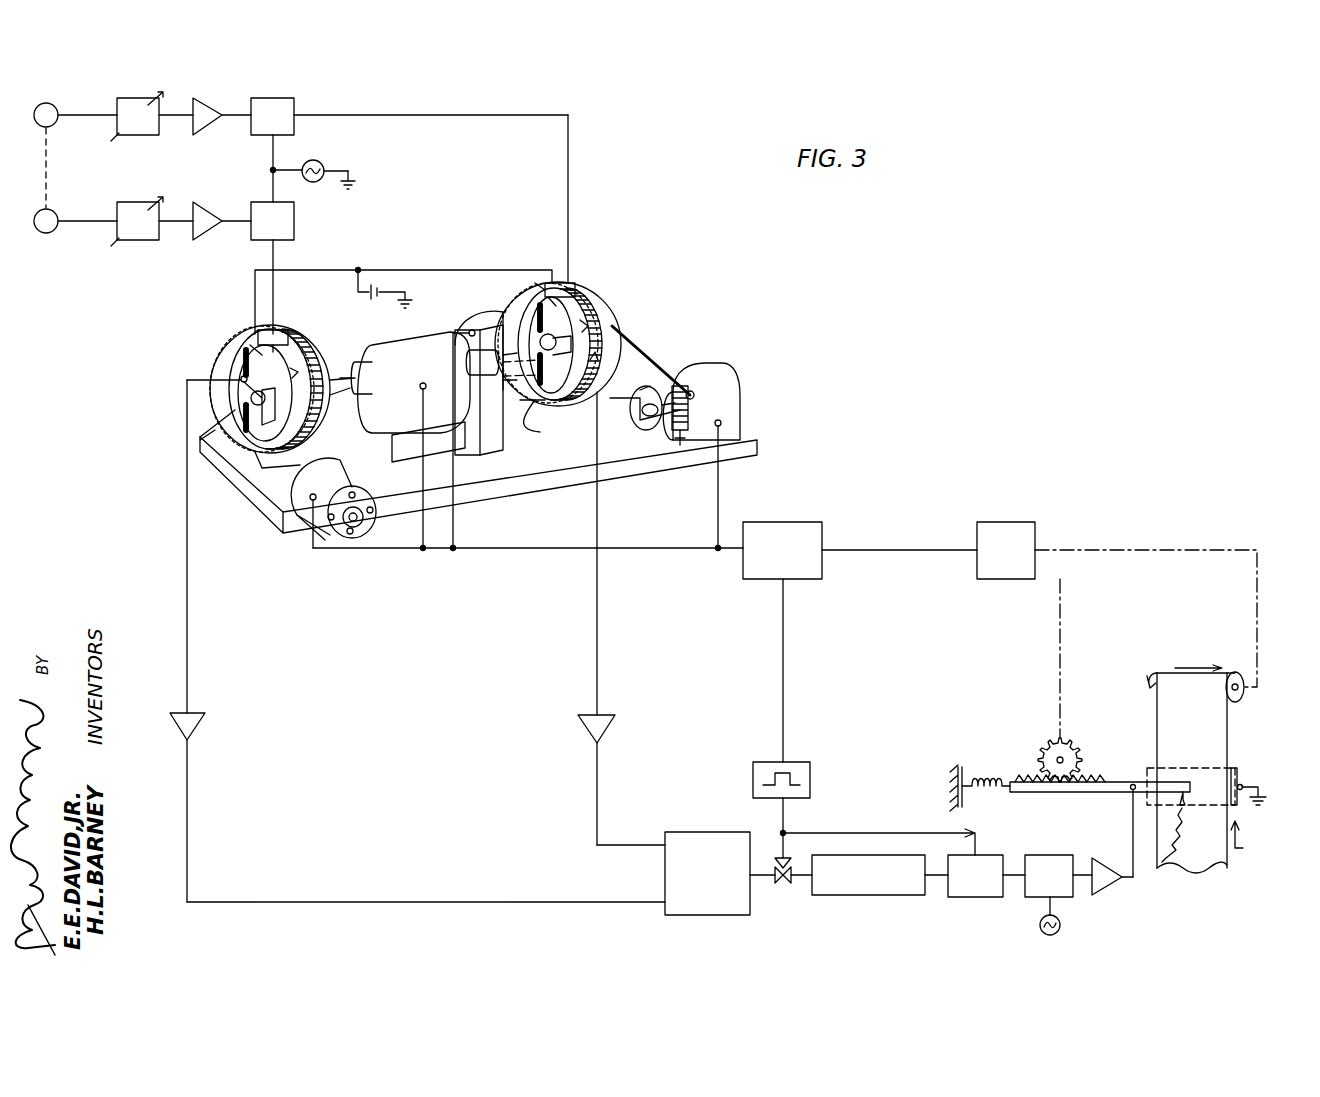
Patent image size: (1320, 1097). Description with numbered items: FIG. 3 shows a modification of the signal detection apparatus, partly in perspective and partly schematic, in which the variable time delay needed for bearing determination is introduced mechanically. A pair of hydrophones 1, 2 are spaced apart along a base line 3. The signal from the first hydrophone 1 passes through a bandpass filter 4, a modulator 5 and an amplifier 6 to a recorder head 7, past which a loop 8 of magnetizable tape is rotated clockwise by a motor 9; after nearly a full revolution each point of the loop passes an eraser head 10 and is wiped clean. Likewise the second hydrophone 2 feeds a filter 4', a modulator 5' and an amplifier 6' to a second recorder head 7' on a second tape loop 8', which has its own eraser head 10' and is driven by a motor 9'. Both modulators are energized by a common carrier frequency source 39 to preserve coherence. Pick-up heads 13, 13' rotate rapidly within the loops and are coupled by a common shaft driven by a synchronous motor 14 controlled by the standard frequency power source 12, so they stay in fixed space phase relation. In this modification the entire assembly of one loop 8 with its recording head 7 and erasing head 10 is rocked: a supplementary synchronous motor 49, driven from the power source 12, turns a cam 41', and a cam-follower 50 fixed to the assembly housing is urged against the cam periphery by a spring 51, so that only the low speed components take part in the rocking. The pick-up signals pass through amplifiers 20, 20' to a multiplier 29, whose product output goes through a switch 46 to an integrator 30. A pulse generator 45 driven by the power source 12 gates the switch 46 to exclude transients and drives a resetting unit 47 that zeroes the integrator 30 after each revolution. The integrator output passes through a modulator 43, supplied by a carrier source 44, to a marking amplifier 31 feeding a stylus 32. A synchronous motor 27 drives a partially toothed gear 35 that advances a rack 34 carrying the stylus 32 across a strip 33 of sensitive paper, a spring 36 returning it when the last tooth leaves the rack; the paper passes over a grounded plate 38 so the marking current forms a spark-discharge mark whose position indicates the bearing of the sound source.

The hydrophone 1 is at (38, 103).
The hydrophone 2 is at (52, 233).
The base line 3 is at (44, 157).
The bandpass filter 4 is at (129, 107).
The filter 4' is at (137, 236).
The modulator 5 is at (288, 104).
The modulator 5' is at (288, 217).
The amplifier 6 is at (215, 105).
The amplifier 6' is at (213, 208).
The recorder head 7 is at (587, 330).
The second recorder head 7' is at (275, 376).
The loop of magnetizable tape 8 is at (583, 338).
The second loop of magnetizable tape 8' is at (289, 378).
The motor 9 is at (496, 366).
The motor 9' is at (333, 523).
The eraser head 10 is at (537, 273).
The eraser head 10' is at (237, 320).
The standard frequency power source 12 is at (788, 520).
The pick-up head 13 is at (546, 384).
The pick-up head 13' is at (240, 432).
The synchronous motor 14 is at (398, 300).
The amplifier 20 is at (621, 618).
The amplifier 20' is at (417, 641).
The synchronous motor 27 is at (1010, 520).
The multiplier 29 is at (725, 915).
The integrator 30 is at (878, 895).
The marking amplifier 31 is at (1112, 890).
The stylus 32 is at (1180, 797).
The strip of sensitive paper 33 is at (1220, 718).
The rack 34 is at (1086, 774).
The gear 35 is at (1068, 745).
The spring 36 is at (995, 776).
The plate 38 is at (1245, 780).
The common carrier frequency source 39 is at (318, 159).
The cam 41' is at (641, 419).
The modulator 43 is at (1060, 855).
The carrier source 44 is at (1060, 927).
The pulse generator 45 is at (810, 782).
The switch 46 is at (775, 862).
The resetting unit 47 is at (975, 897).
The supplementary synchronous motor 49 is at (740, 398).
The cam-follower 50 is at (660, 350).
The spring 51 is at (674, 450).